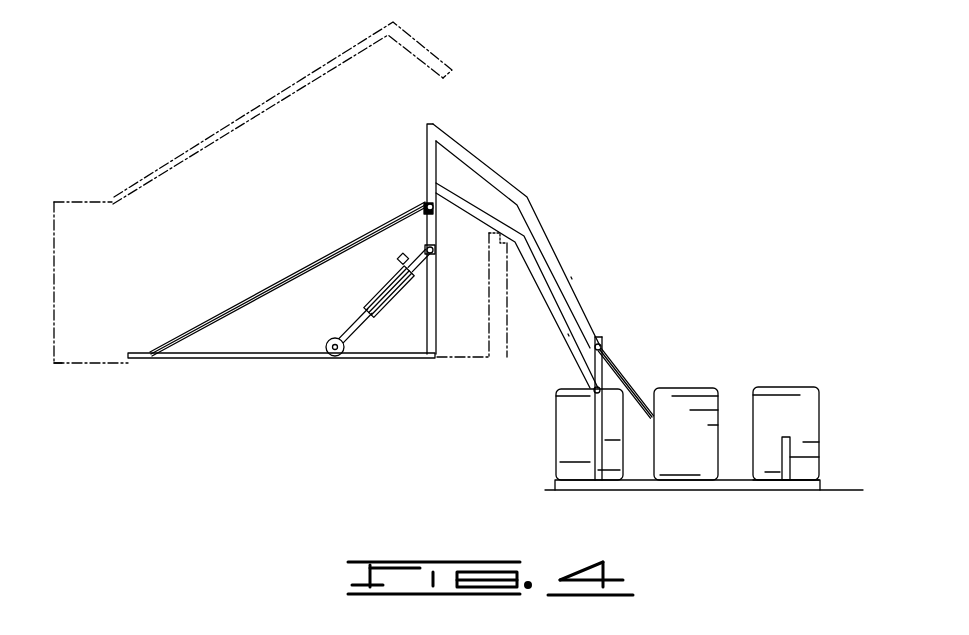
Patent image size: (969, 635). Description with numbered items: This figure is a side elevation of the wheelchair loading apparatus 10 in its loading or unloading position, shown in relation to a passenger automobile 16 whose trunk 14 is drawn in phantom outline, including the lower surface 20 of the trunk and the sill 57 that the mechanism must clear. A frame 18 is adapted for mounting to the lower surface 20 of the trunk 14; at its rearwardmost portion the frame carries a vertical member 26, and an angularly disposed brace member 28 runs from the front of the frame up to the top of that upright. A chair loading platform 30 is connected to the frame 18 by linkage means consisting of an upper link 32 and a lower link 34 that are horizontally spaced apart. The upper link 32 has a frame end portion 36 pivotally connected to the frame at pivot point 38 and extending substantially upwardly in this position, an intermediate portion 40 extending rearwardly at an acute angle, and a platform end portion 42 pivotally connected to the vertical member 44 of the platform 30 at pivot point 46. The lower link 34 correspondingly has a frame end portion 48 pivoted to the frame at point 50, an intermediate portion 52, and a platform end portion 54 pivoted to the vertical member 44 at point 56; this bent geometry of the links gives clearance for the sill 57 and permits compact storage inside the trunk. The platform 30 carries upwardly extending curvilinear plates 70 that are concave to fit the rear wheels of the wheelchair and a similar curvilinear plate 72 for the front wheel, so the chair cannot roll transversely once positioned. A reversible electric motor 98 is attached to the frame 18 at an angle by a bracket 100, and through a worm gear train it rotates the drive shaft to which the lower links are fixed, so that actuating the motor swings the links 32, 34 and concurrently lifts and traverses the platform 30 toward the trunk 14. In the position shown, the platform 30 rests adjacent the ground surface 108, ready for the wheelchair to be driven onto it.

The wheelchair loading apparatus 10 is at (633, 191).
The trunk 14 is at (54, 318).
The passenger automobile 16 is at (116, 190).
The frame 18 is at (308, 296).
The lower surface 20 is at (62, 362).
The vertical member 26 is at (430, 334).
The brace member 28 is at (296, 272).
The chair loading platform 30 is at (806, 378).
The upper link 32 is at (522, 231).
The lower link 34 is at (517, 285).
The frame end portion 36 is at (427, 148).
The pivot point 38 is at (421, 216).
The intermediate portion 40 is at (500, 176).
The platform end portion 42 is at (571, 277).
The vertical member 44 is at (594, 440).
The pivot point 46 is at (603, 347).
The frame end portion 48 is at (427, 191).
The pivot point 50 is at (427, 289).
The intermediate portion 52 is at (498, 222).
The platform end portion 54 is at (568, 334).
The pivot point 56 is at (593, 392).
The sill 57 is at (489, 288).
The curvilinear plate 70 is at (568, 463).
The curvilinear plate 72 is at (680, 412).
The reversible electric motor 98 is at (370, 296).
The bracket 100 is at (358, 330).
The ground surface 108 is at (832, 490).